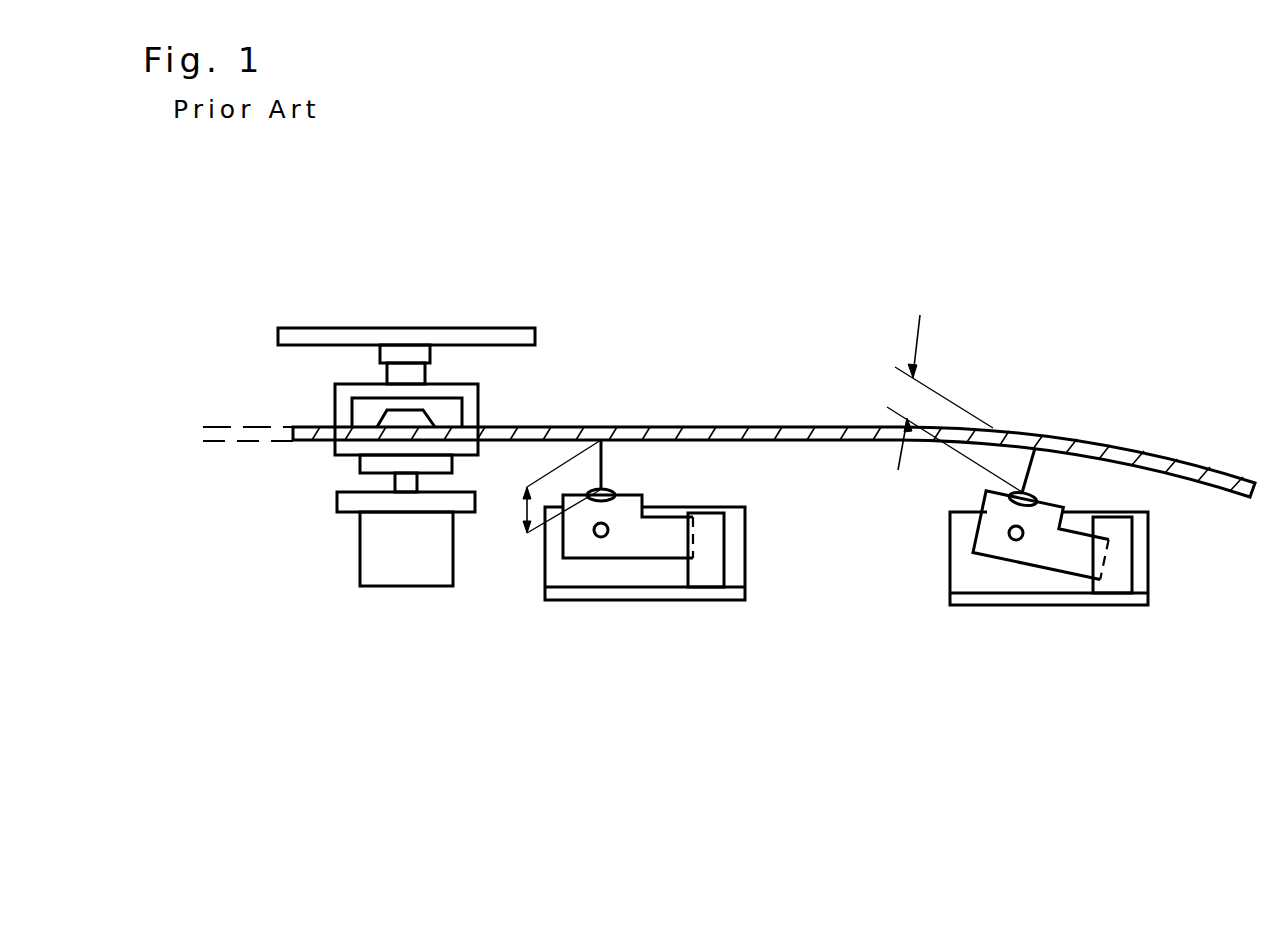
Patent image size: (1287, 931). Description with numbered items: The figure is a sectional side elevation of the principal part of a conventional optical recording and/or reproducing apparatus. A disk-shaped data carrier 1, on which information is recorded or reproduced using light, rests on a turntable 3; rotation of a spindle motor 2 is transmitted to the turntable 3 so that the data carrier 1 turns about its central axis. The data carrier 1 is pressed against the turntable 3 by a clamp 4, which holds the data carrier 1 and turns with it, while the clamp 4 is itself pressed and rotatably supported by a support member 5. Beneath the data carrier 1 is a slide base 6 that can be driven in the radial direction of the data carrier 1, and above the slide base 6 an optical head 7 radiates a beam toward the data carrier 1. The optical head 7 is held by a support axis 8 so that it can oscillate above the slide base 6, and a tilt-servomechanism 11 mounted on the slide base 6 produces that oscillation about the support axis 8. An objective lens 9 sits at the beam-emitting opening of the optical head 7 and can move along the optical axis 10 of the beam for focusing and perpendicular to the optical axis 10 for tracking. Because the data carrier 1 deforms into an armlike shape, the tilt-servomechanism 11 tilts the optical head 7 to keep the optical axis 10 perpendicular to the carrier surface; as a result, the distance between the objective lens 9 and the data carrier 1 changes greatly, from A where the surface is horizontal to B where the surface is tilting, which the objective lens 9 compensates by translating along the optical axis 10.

The data carrier 1 is at (758, 427).
The spindle motor 2 is at (413, 580).
The turntable 3 is at (333, 448).
The clamp 4 is at (478, 403).
The support member 5 is at (477, 328).
The slide base 6 is at (630, 600).
The optical head 7 is at (675, 552).
The support axis 8 is at (600, 538).
The objective lens 9 is at (613, 490).
The optical axis 10 is at (603, 470).
The tilt-servomechanism 11 is at (713, 565).
The distance A is at (518, 513).
The distance B is at (902, 392).